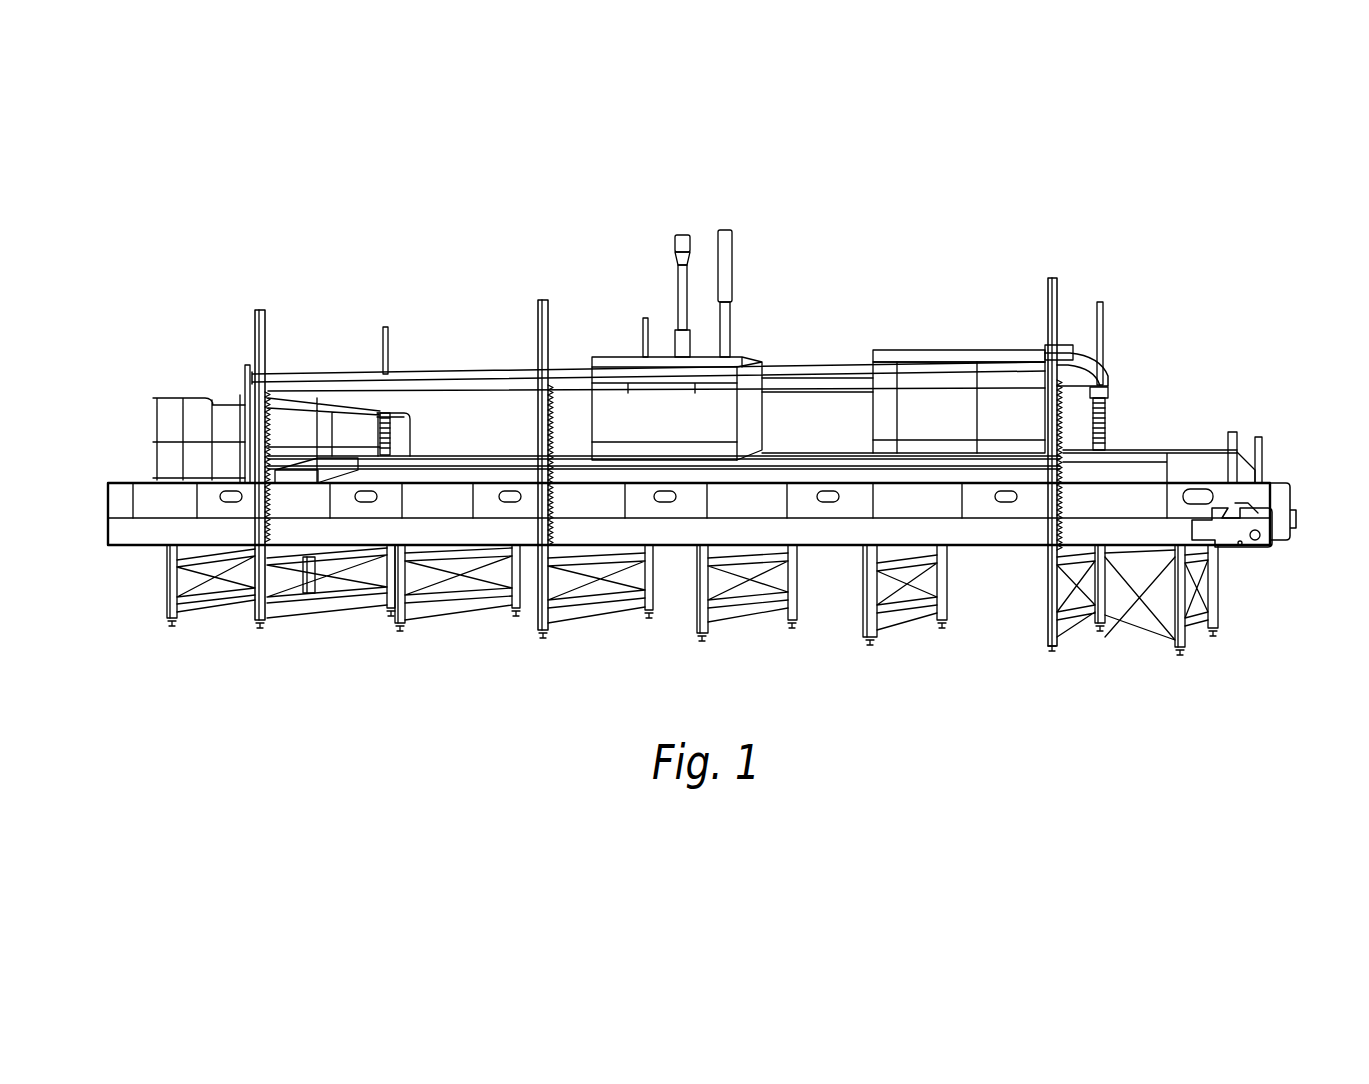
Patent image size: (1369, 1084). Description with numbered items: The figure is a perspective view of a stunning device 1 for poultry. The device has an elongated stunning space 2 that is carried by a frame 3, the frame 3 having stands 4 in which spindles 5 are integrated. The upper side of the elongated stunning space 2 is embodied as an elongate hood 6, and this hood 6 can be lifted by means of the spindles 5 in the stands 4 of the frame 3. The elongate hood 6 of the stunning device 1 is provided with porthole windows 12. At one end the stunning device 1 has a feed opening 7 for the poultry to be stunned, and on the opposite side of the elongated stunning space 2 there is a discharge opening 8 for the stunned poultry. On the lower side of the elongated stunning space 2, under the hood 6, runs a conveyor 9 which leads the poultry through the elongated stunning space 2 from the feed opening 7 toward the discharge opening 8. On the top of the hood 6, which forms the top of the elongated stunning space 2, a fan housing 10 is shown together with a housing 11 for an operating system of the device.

The stunning device 1 is at (1229, 294).
The elongated stunning space 2 is at (1135, 445).
The frame 3 is at (395, 613).
The stand 4 is at (540, 420).
The spindles 5 is at (390, 433).
The elongate hood 6 is at (852, 505).
The feed opening 7 is at (114, 458).
The discharge opening 8 is at (1294, 464).
The conveyor 9 is at (1275, 533).
The fan housing 10 is at (625, 410).
The housing for an operating system 11 is at (940, 403).
The porthole windows 12 is at (230, 502).